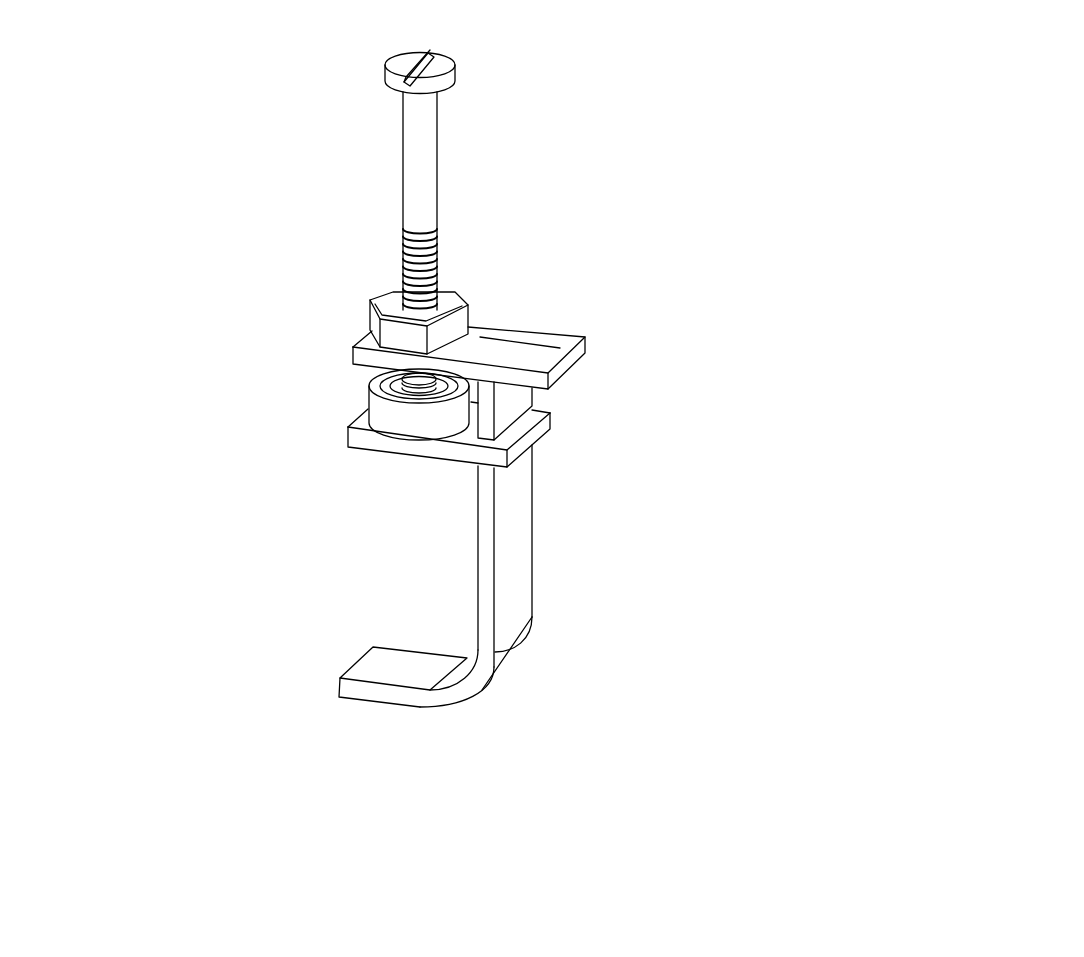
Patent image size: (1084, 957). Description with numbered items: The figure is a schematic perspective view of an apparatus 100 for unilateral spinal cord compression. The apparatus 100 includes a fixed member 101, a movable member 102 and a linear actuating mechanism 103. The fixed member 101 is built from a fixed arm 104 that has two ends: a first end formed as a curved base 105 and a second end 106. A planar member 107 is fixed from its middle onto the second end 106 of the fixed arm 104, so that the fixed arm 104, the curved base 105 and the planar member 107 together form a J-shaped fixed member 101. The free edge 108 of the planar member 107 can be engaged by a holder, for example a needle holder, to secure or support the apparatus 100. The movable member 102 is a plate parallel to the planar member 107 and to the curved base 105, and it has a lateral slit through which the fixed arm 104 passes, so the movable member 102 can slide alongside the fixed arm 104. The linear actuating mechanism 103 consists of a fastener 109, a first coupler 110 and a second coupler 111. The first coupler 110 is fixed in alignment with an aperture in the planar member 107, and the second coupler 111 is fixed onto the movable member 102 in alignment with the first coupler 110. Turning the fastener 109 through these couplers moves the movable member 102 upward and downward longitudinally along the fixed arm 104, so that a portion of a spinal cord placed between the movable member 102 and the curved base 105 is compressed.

The apparatus 100 is at (760, 106).
The fixed member 101 is at (616, 563).
The movable member 102 is at (413, 445).
The linear actuating mechanism 103 is at (221, 178).
The fixed arm 104 is at (518, 522).
The curved base 105 is at (405, 698).
The second end 106 is at (487, 382).
The planar member 107 is at (521, 312).
The free edge 108 is at (568, 353).
The fastener 109 is at (386, 169).
The first coupler 110 is at (368, 320).
The second coupler 111 is at (382, 413).